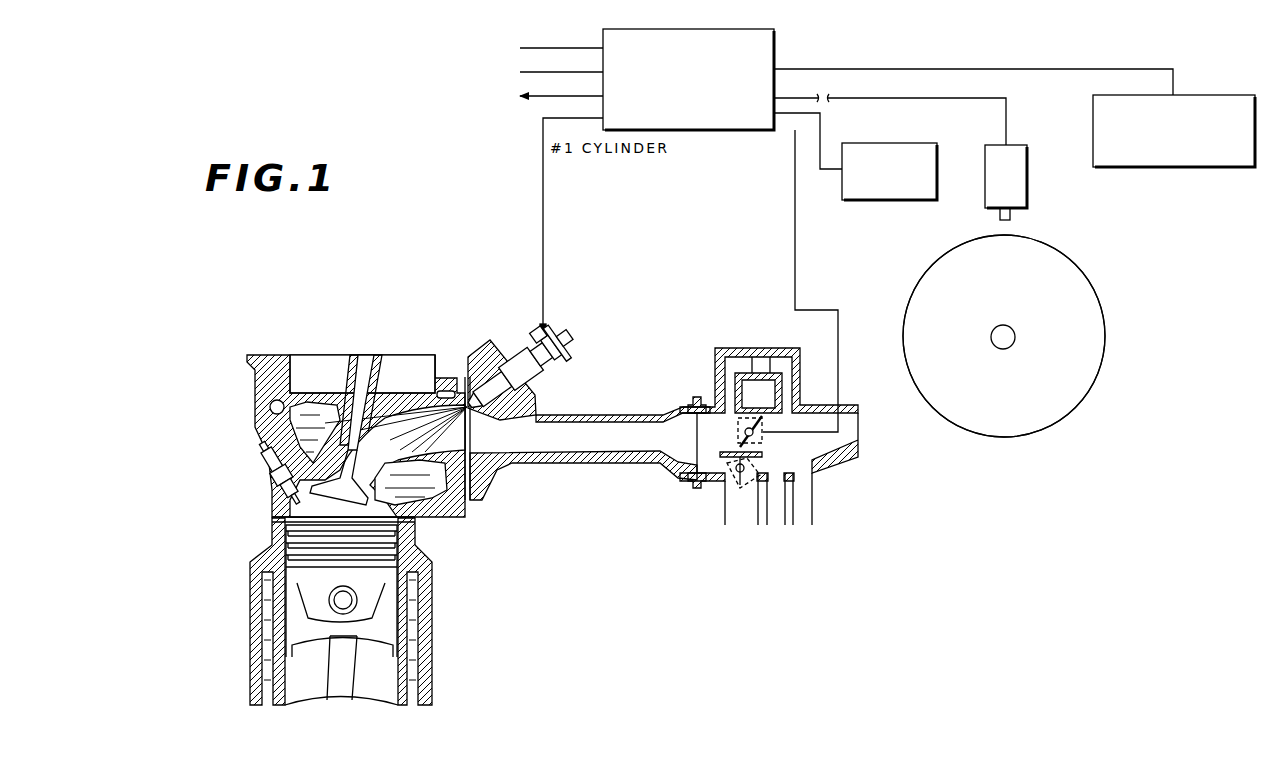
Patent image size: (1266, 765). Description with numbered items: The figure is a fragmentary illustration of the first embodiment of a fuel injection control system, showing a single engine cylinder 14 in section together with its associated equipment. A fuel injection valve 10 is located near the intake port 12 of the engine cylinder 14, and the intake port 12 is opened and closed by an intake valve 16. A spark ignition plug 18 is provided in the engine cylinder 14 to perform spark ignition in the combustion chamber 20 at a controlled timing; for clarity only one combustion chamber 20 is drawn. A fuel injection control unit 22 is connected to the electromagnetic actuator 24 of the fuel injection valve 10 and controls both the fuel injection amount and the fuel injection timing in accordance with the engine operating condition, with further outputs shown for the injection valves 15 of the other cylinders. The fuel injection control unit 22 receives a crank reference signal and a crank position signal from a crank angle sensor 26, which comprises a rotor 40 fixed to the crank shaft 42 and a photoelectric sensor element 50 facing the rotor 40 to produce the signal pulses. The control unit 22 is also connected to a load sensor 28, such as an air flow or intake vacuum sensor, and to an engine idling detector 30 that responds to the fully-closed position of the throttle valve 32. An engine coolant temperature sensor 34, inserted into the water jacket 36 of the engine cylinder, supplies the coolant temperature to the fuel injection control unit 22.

The fuel injection valve 10 is at (518, 357).
The intake port 12 is at (369, 612).
The engine cylinder 14 is at (245, 603).
The fuel injectors of other cylinders 15 is at (583, 118).
The intake valve 16 is at (300, 427).
The spark ignition plug 18 is at (262, 455).
The combustion chamber 20 is at (272, 508).
The fuel injection control unit 22 is at (748, 133).
The electromagnetic actuator 24 is at (530, 350).
The crank angle sensor 26 is at (1040, 232).
The load sensor 28 is at (912, 201).
The engine idling detector 30 is at (765, 435).
The throttle valve 32 is at (740, 420).
The engine coolant temperature sensor 34 is at (1223, 95).
The water jacket 36 is at (318, 405).
The rotor 40 is at (1097, 328).
The crank shaft 42 is at (1009, 346).
The photoelectric sensor element 50 is at (1030, 156).